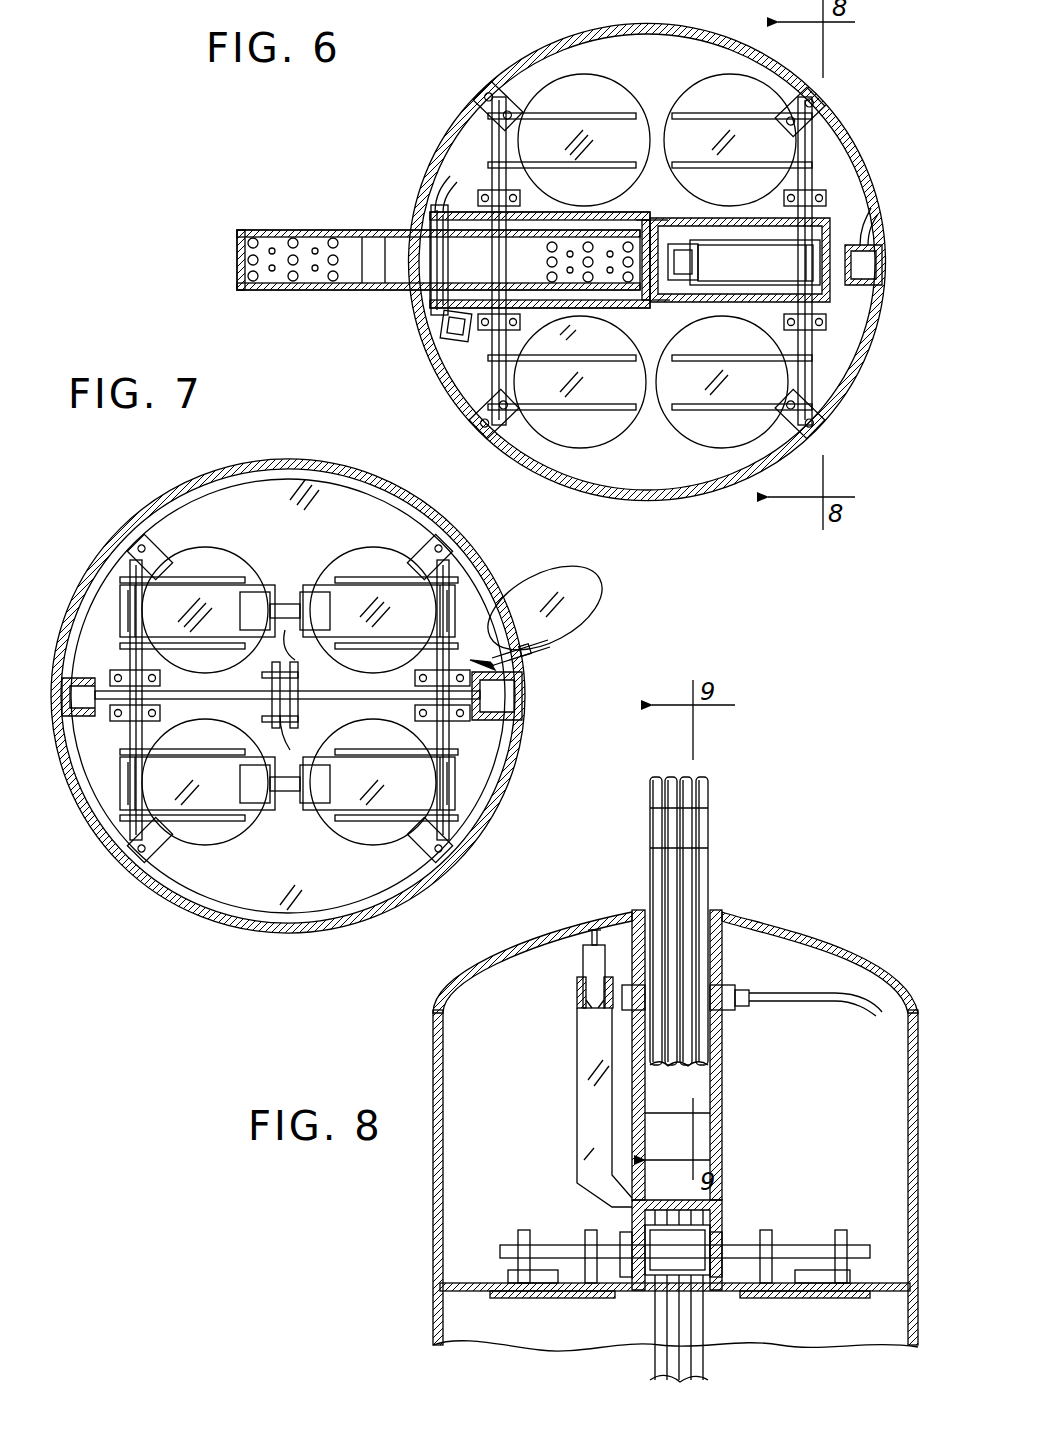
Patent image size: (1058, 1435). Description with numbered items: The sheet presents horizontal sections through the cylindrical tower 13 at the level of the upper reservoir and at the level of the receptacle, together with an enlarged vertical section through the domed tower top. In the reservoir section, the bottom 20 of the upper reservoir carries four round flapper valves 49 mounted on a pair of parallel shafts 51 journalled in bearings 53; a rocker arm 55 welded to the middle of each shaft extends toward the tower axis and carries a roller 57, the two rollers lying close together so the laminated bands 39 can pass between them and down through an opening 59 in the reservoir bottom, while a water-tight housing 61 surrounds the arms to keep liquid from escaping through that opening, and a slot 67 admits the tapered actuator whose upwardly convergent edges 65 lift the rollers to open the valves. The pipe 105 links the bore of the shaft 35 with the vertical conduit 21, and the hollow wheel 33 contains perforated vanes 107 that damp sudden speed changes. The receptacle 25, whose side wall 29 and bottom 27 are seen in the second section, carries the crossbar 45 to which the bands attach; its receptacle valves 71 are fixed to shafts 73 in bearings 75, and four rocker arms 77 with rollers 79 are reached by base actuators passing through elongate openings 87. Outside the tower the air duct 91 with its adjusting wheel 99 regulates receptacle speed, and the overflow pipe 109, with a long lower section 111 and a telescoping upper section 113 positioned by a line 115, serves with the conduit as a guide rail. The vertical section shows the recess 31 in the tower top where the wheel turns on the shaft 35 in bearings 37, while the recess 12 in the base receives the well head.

In FIG. 6, the recess 12 is at (548, 228).
In FIG. 6, the cylindrical tower 13 is at (878, 188).
In FIG. 7, the cylindrical tower 13 is at (158, 515).
In FIG. 8, the cylindrical tower 13 is at (920, 1130).
In FIG. 8, the bottom of the upper reservoir 20 is at (850, 1292).
In FIG. 6, the conduit 21 is at (872, 292).
In FIG. 7, the conduit 21 is at (524, 700).
In FIG. 7, the receptacle 25 is at (505, 685).
In FIG. 7, the bottom of the receptacle 27 is at (290, 910).
In FIG. 7, the side wall of the receptacle 29 is at (305, 492).
In FIG. 8, the recess 31 is at (722, 915).
In FIG. 6, the wheel 33 is at (320, 230).
In FIG. 8, the wheel 33 is at (710, 820).
In FIG. 6, the shaft 35 is at (432, 282).
In FIG. 8, the shaft 35 is at (740, 985).
In FIG. 8, the bearings 37 is at (630, 985).
In FIG. 6, the bands 39 is at (660, 302).
In FIG. 7, the bands 39 is at (293, 697).
In FIG. 8, the bands 39 is at (680, 1360).
In FIG. 7, the crossbar 45 is at (450, 702).
In FIG. 6, the flapper valves 49 is at (593, 95).
In FIG. 8, the flapper valves 49 is at (525, 1298).
In FIG. 6, the shafts 51 is at (492, 148).
In FIG. 8, the shafts 51 is at (500, 1250).
In FIG. 6, the bearings 53 is at (822, 110).
In FIG. 8, the bearings 53 is at (520, 1228).
In FIG. 6, the rocker arm 55 is at (740, 238).
In FIG. 8, the rocker arm 55 is at (722, 1240).
In FIG. 6, the roller 57 is at (705, 252).
In FIG. 8, the roller 57 is at (700, 1225).
In FIG. 6, the opening 59 is at (658, 218).
In FIG. 6, the housing 61 is at (688, 228).
In FIG. 8, the housing 61 is at (707, 1210).
In FIG. 7, the upwardly convergent edges 65 is at (265, 695).
In FIG. 6, the slot 67 is at (578, 332).
In FIG. 7, the receptacle valves 71 is at (205, 548).
In FIG. 7, the shafts 73 is at (110, 722).
In FIG. 7, the bearings 75 is at (140, 560).
In FIG. 7, the rocker arms 77 is at (125, 598).
In FIG. 7, the roller 79 is at (272, 585).
In FIG. 7, the elongate openings 87 is at (290, 592).
In FIG. 7, the air duct 91 is at (600, 608).
In FIG. 7, the wheel 99 is at (560, 640).
In FIG. 6, the pipe 105 is at (440, 180).
In FIG. 8, the pipe 105 is at (850, 1015).
In FIG. 6, the vanes 107 is at (275, 292).
In FIG. 6, the overflow pipe 109 is at (438, 338).
In FIG. 7, the overflow pipe 109 is at (72, 722).
In FIG. 8, the lower section 111 is at (577, 1040).
In FIG. 8, the upper section 113 is at (577, 985).
In FIG. 8, the line 115 is at (590, 940).